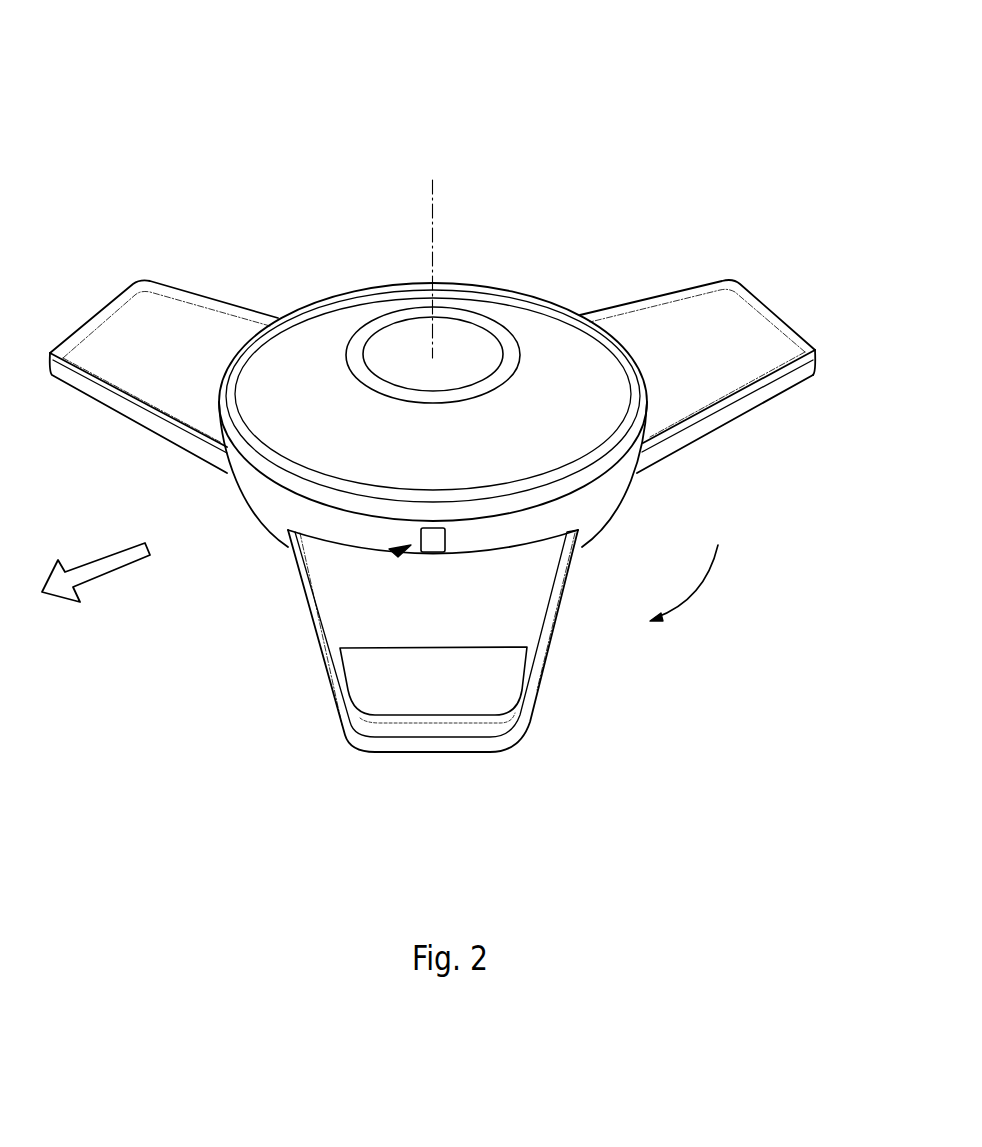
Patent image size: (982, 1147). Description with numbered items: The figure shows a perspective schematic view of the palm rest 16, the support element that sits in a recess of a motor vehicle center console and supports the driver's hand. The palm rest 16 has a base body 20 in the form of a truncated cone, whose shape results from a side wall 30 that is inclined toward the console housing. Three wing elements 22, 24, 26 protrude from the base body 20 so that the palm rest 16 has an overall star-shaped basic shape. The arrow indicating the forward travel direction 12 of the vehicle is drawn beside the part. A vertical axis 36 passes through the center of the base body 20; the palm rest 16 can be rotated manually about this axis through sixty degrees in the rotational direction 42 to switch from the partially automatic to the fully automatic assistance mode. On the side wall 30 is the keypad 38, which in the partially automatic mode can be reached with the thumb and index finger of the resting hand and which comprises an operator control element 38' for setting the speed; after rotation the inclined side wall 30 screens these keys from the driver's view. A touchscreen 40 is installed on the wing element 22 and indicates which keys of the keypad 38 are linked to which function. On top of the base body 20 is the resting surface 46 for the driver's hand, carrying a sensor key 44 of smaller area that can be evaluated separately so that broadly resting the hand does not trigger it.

The forward travel direction 12 is at (107, 563).
The palm rest 16 is at (692, 198).
The base body 20 is at (325, 317).
The wing element 22 is at (548, 680).
The wing element 24 is at (123, 323).
The wing element 26 is at (740, 323).
The side wall 30 is at (648, 462).
The vertical axis 36 is at (432, 252).
The keypad 38 is at (327, 596).
The operator control element 38' is at (439, 492).
The touchscreen 40 is at (433, 653).
The rotational direction 42 is at (700, 588).
The sensor key 44 is at (460, 337).
The resting surface 46 is at (540, 332).